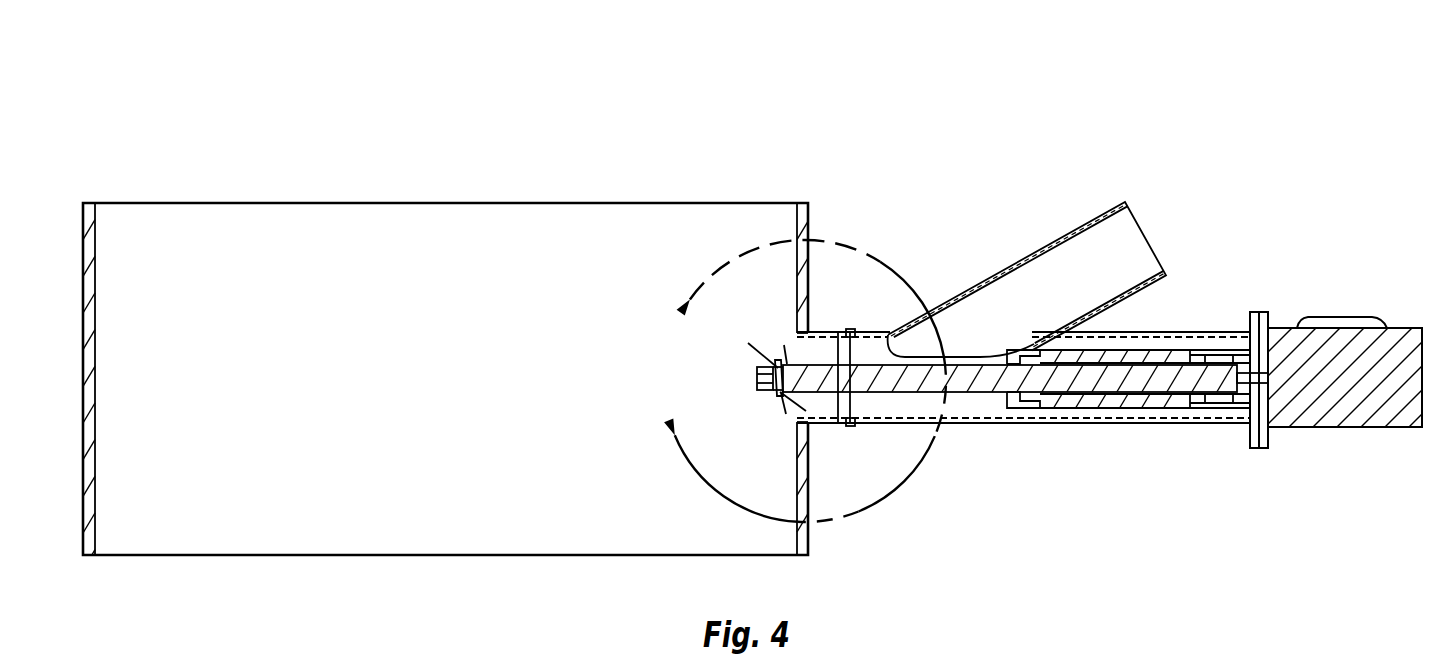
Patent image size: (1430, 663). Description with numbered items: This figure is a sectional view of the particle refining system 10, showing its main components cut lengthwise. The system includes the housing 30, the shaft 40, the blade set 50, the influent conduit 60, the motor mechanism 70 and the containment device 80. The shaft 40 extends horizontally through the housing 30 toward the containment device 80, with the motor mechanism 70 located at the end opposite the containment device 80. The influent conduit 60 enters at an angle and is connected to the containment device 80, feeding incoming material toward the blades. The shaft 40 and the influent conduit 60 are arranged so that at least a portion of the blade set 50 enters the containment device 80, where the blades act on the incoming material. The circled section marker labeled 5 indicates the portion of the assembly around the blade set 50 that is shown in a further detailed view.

The particle refining system 10 is at (853, 165).
The containment device 80 is at (630, 203).
The section view indicator 5 is at (804, 381).
The blade set 50 is at (781, 408).
The shaft 40 is at (975, 392).
The influent conduit 60 is at (1015, 262).
The housing 30 is at (1233, 402).
The motor mechanism 70 is at (1320, 417).